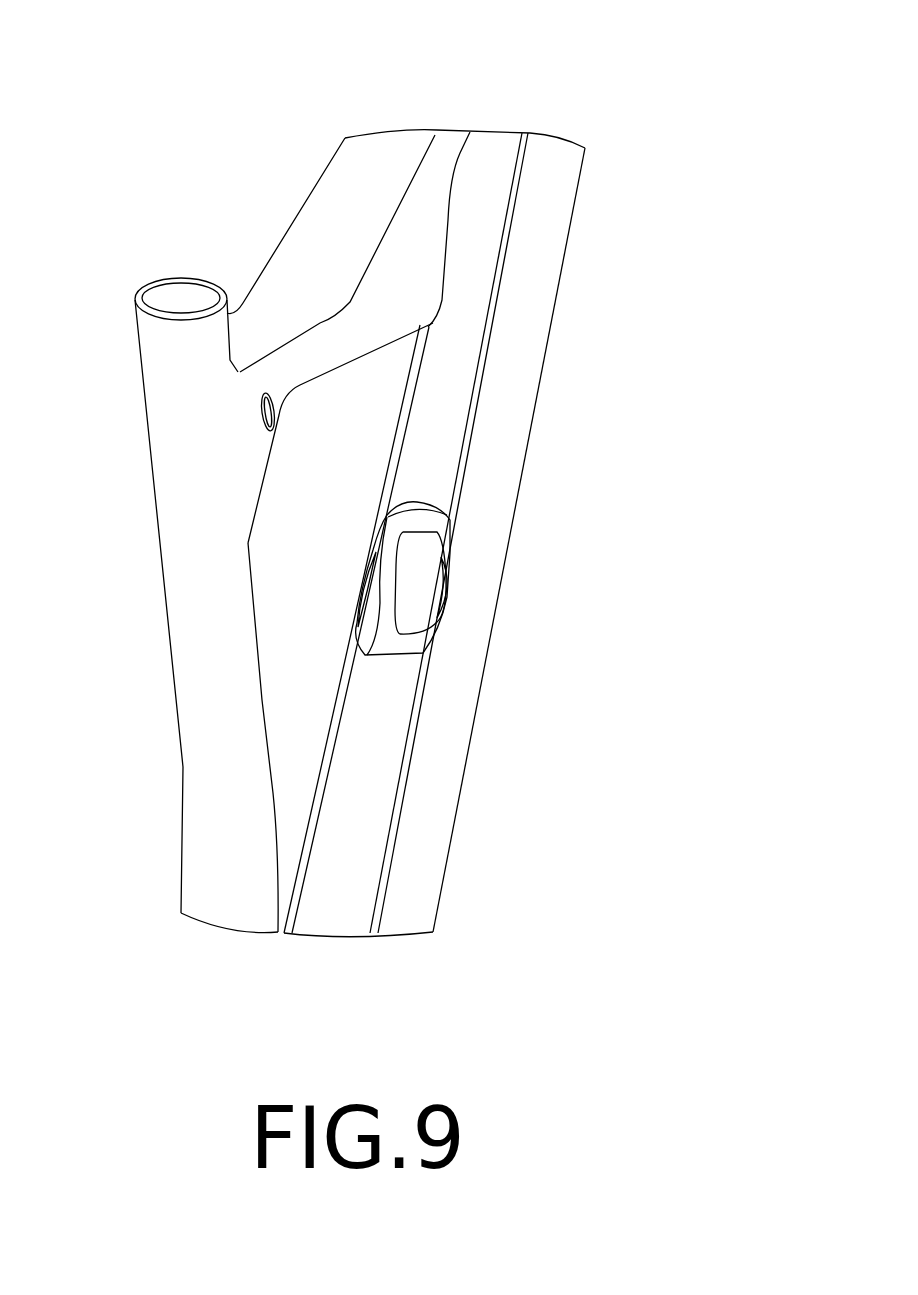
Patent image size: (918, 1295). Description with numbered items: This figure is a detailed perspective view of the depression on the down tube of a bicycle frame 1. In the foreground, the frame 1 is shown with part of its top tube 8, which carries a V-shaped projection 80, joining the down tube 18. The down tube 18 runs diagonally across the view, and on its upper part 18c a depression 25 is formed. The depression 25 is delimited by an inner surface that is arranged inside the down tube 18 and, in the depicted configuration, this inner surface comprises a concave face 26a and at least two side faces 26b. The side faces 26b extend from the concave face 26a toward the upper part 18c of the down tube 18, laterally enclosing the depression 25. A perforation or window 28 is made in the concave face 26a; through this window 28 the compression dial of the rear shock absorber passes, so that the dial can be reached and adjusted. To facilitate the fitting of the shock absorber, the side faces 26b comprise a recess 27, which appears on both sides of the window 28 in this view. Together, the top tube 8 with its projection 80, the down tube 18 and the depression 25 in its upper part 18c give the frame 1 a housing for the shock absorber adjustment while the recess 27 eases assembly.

The frame 1 is at (167, 79).
The top tube 8 is at (328, 212).
The V-shaped projection 80 is at (423, 305).
The down tube 18 is at (508, 415).
The upper part of the down tube 18c is at (352, 786).
The depression 25 is at (398, 661).
The concave face 26a is at (408, 518).
The side faces 26b is at (377, 623).
The recess 27 is at (368, 605).
The perforation or window 28 is at (418, 577).